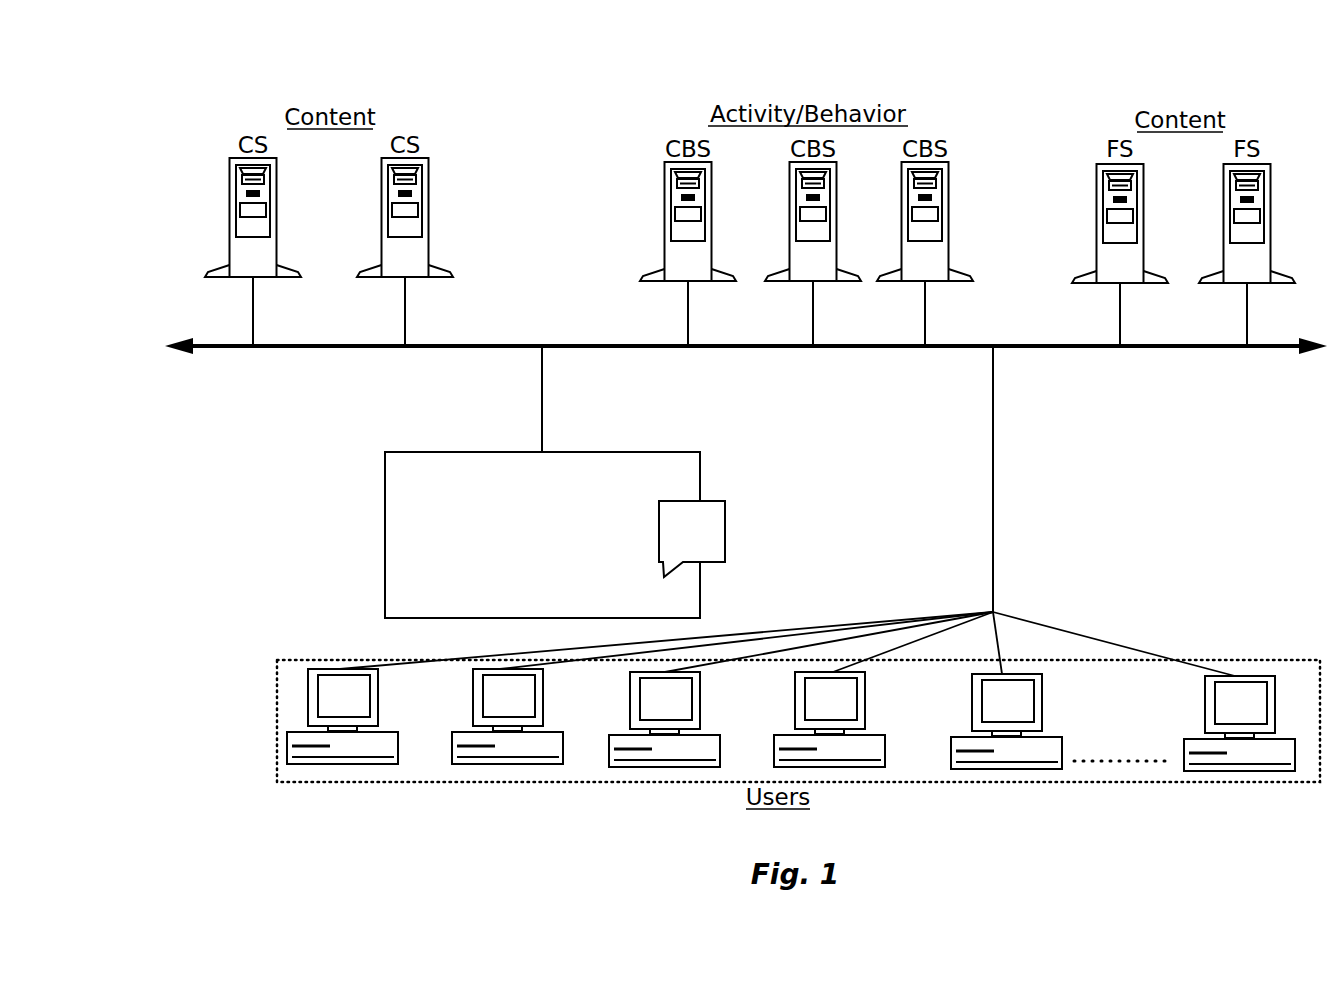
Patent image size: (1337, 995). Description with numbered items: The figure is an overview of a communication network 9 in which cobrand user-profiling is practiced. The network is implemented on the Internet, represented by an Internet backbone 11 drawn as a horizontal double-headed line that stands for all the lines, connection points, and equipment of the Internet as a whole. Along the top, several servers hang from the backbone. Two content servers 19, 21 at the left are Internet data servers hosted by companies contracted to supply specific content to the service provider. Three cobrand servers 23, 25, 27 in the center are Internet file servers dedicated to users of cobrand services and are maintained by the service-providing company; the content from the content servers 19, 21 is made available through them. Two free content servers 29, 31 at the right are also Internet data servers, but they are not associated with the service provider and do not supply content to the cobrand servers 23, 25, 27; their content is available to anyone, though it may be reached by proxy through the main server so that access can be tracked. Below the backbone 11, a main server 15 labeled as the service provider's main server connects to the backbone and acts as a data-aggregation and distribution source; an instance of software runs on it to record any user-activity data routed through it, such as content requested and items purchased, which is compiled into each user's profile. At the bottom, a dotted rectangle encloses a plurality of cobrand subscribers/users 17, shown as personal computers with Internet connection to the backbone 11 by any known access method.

The communication network 9 is at (182, 105).
The Internet backbone 11 is at (611, 344).
The main server 15 is at (379, 547).
The cobrand subscribers/users 17 is at (271, 735).
The content server 19 is at (229, 238).
The content server 21 is at (429, 218).
The cobrand server 23 is at (664, 232).
The cobrand server 25 is at (789, 245).
The cobrand server 27 is at (901, 246).
The free content server 29 is at (1096, 253).
The free content server 31 is at (1223, 255).